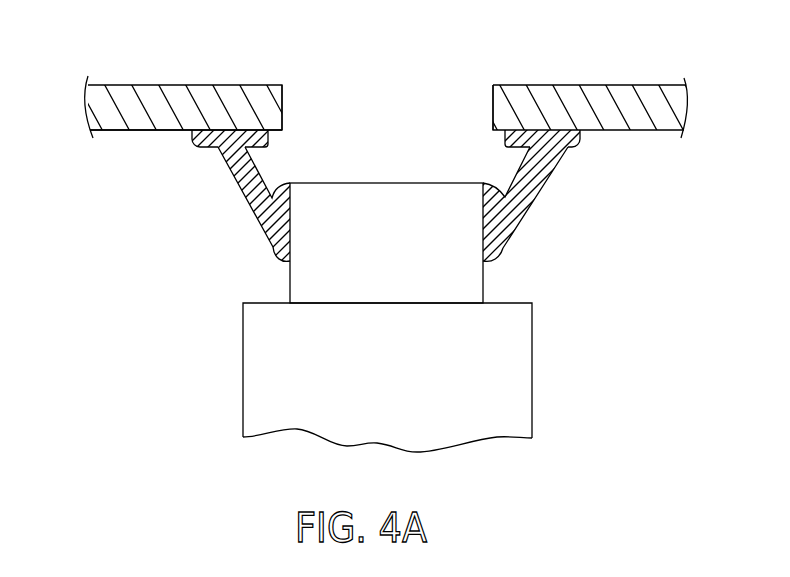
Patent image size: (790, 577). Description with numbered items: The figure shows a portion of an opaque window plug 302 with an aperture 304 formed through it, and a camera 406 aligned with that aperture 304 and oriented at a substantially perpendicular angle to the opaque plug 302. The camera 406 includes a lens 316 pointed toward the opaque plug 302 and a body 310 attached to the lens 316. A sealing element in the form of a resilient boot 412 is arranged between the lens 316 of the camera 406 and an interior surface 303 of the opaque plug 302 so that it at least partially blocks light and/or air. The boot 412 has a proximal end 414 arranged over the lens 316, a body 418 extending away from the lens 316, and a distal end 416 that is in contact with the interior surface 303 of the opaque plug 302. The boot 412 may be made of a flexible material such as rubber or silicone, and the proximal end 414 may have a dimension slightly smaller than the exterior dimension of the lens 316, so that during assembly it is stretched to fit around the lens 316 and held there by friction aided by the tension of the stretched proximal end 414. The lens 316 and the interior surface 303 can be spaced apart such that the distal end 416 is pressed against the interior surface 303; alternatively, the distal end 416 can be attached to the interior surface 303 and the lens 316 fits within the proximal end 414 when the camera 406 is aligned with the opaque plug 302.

The opaque plug 302 is at (177, 90).
The interior surface 303 is at (178, 128).
The aperture 304 is at (392, 77).
The body 310 is at (532, 378).
The lens 316 is at (468, 276).
The camera 406 is at (445, 317).
The boot 412 is at (388, 192).
The proximal end 414 is at (260, 218).
The distal end 416 is at (262, 137).
The body 418 is at (245, 175).